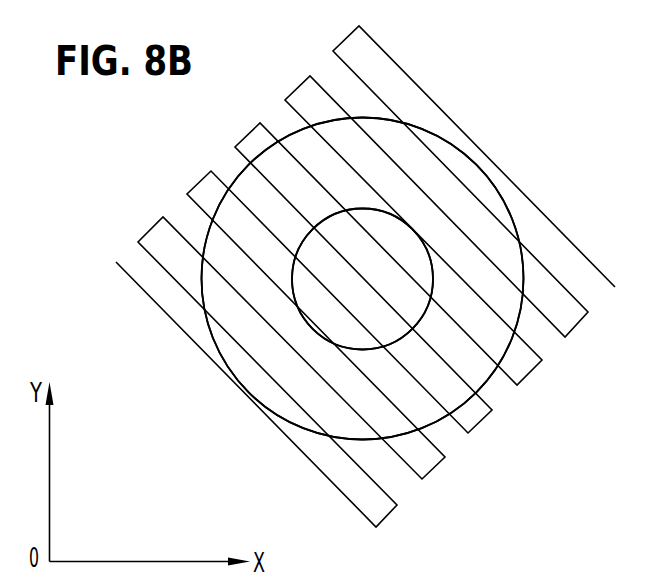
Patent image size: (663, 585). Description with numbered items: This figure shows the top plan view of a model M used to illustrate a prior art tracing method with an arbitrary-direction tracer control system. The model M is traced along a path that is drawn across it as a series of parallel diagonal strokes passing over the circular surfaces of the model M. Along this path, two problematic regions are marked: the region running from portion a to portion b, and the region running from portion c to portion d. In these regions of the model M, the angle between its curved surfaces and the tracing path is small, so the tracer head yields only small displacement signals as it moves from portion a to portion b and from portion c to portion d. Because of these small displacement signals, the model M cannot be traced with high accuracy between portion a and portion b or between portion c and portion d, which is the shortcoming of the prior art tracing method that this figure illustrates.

The model M is at (365, 276).
The portion a is at (483, 160).
The portion b is at (413, 228).
The portion c is at (305, 325).
The portion d is at (246, 391).